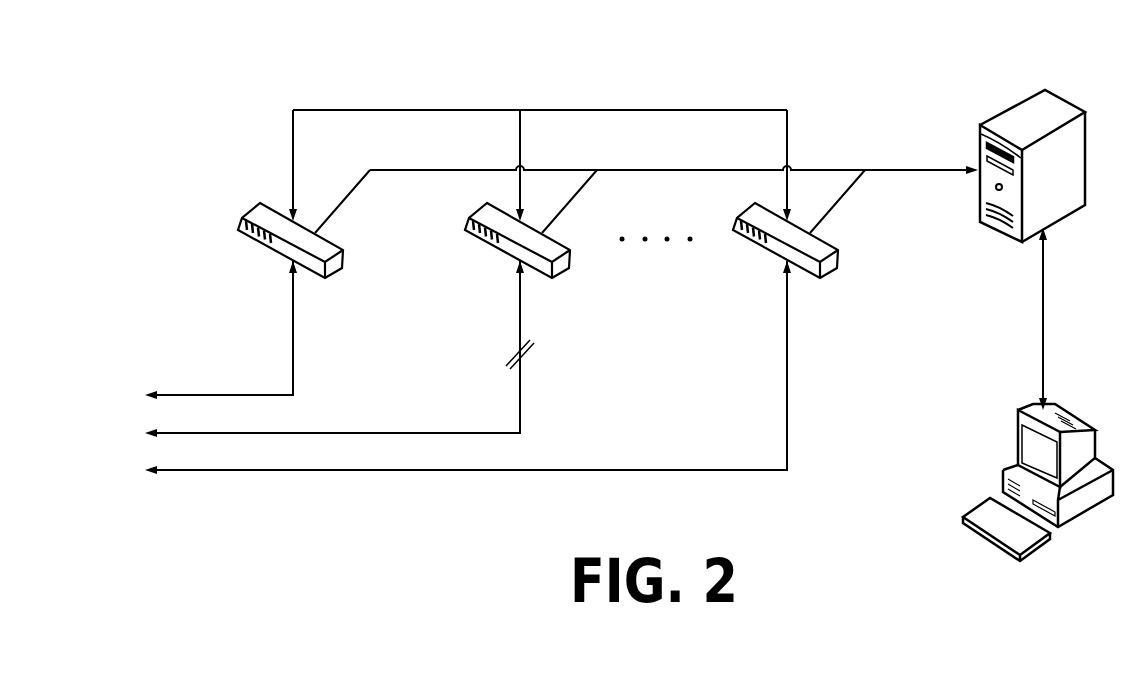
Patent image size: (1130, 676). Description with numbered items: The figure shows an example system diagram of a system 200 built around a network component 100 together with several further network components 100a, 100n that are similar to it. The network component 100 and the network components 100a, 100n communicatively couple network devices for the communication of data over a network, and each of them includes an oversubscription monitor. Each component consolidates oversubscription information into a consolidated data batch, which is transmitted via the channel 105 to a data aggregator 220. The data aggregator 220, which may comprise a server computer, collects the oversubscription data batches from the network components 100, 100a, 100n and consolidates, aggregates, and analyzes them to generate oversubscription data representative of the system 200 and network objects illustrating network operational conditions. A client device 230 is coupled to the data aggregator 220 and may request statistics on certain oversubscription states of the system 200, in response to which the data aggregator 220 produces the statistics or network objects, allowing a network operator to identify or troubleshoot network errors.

The system 200 is at (245, 52).
The network component 100 is at (240, 217).
The network component 100a is at (468, 217).
The network component 100n is at (736, 217).
The channel 105 is at (910, 170).
The data aggregator 220 is at (1015, 107).
The client device 230 is at (1022, 410).